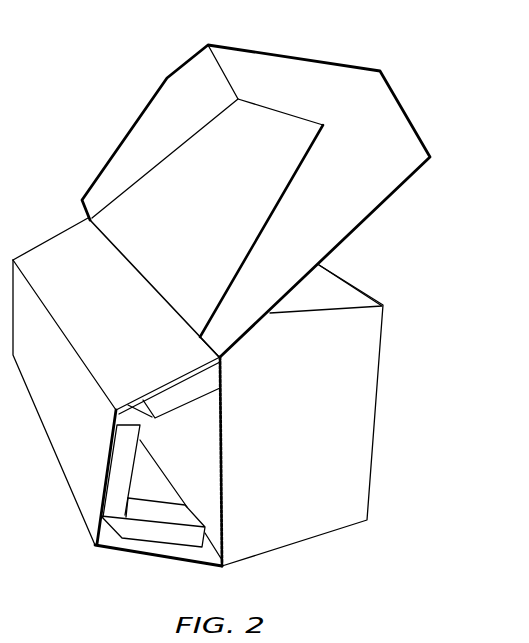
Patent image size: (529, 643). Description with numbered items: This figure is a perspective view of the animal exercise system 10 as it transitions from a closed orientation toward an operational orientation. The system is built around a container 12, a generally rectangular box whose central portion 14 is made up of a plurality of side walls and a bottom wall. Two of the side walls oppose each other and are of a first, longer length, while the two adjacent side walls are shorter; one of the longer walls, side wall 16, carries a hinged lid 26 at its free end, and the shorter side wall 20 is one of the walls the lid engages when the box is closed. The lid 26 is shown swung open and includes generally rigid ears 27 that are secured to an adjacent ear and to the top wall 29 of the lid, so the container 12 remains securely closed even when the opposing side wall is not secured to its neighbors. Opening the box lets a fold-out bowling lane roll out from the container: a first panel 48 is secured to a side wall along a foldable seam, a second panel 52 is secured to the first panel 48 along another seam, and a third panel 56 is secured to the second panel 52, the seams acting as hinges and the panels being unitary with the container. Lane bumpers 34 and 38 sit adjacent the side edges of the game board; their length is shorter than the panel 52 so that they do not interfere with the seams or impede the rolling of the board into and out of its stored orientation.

The animal exercise system 10 is at (445, 79).
The container 12 is at (229, 405).
The central portion 14 is at (357, 354).
The side wall 16 is at (307, 303).
The side wall 20 is at (286, 409).
The hinged lid 26 is at (382, 205).
The ears 27 is at (168, 110).
The top wall 29 is at (196, 203).
The lane bumper 34 is at (177, 397).
The lane bumper 38 is at (122, 470).
The first panel 48 is at (200, 552).
The second panel 52 is at (46, 391).
The third panel 56 is at (94, 313).